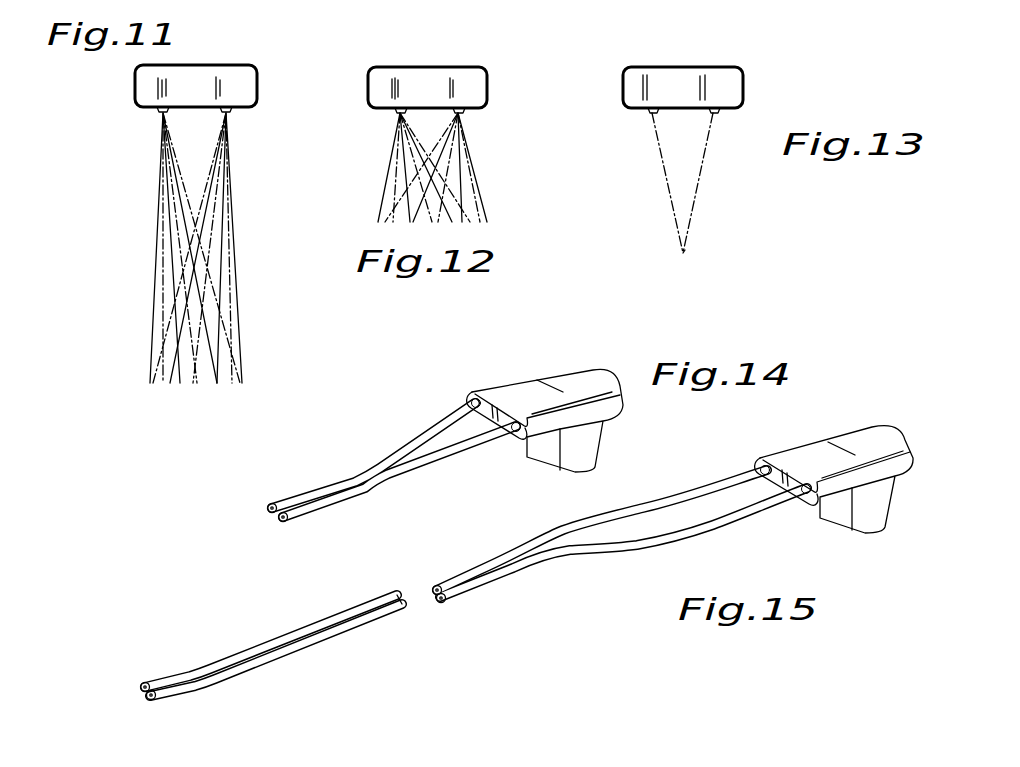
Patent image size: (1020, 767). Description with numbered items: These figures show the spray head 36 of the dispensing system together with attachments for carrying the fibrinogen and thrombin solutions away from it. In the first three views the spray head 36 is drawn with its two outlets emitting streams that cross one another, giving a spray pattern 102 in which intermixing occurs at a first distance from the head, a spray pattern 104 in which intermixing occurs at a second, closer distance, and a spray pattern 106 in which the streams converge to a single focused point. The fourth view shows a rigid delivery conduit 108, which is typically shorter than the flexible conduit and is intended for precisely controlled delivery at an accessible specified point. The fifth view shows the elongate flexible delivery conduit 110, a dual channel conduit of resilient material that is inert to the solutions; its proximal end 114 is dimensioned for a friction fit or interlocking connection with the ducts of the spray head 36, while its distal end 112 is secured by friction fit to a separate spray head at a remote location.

In FIG. 11, the spray head 36 is at (222, 78).
In FIG. 12, the spray head 36 is at (442, 72).
In FIG. 13, the spray head 36 is at (688, 82).
In FIG. 14, the spray head 36 is at (550, 380).
In FIG. 15, the spray head 36 is at (862, 430).
In FIG. 11, the wide beam pattern 102 is at (246, 390).
In FIG. 12, the medium beam pattern 104 is at (575, 196).
In FIG. 13, the converging beam pattern 106 is at (690, 253).
In FIG. 14, the delivery conduit 108 is at (307, 492).
In FIG. 15, the delivery conduit 110 is at (407, 567).
In FIG. 15, the distal end 112 is at (138, 688).
In FIG. 15, the proximal end 114 is at (787, 500).